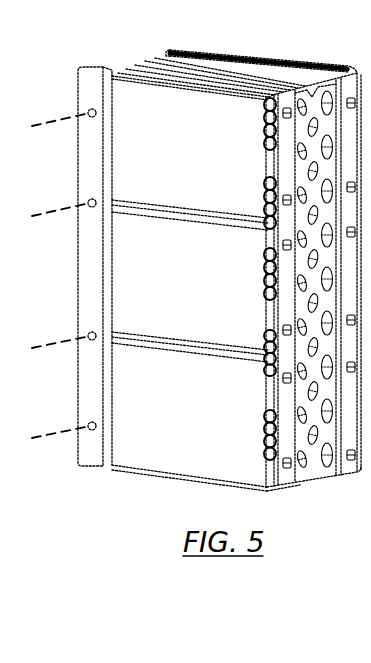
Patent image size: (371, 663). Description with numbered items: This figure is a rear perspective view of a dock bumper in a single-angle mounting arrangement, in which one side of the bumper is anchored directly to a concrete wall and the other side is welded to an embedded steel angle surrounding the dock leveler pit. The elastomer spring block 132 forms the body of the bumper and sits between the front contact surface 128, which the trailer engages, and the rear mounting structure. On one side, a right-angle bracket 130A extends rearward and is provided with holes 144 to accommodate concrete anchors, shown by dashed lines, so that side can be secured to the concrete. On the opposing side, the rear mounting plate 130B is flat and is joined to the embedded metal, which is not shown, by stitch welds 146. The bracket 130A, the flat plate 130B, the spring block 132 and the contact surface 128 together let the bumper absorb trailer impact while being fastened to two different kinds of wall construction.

The front contact surface 128 is at (317, 72).
The right-angle bracket 130A is at (95, 68).
The rear mounting plate 130B is at (287, 490).
The elastomer spring block 132 is at (213, 290).
The holes 144 is at (90, 112).
The stitch weld 146 is at (265, 138).